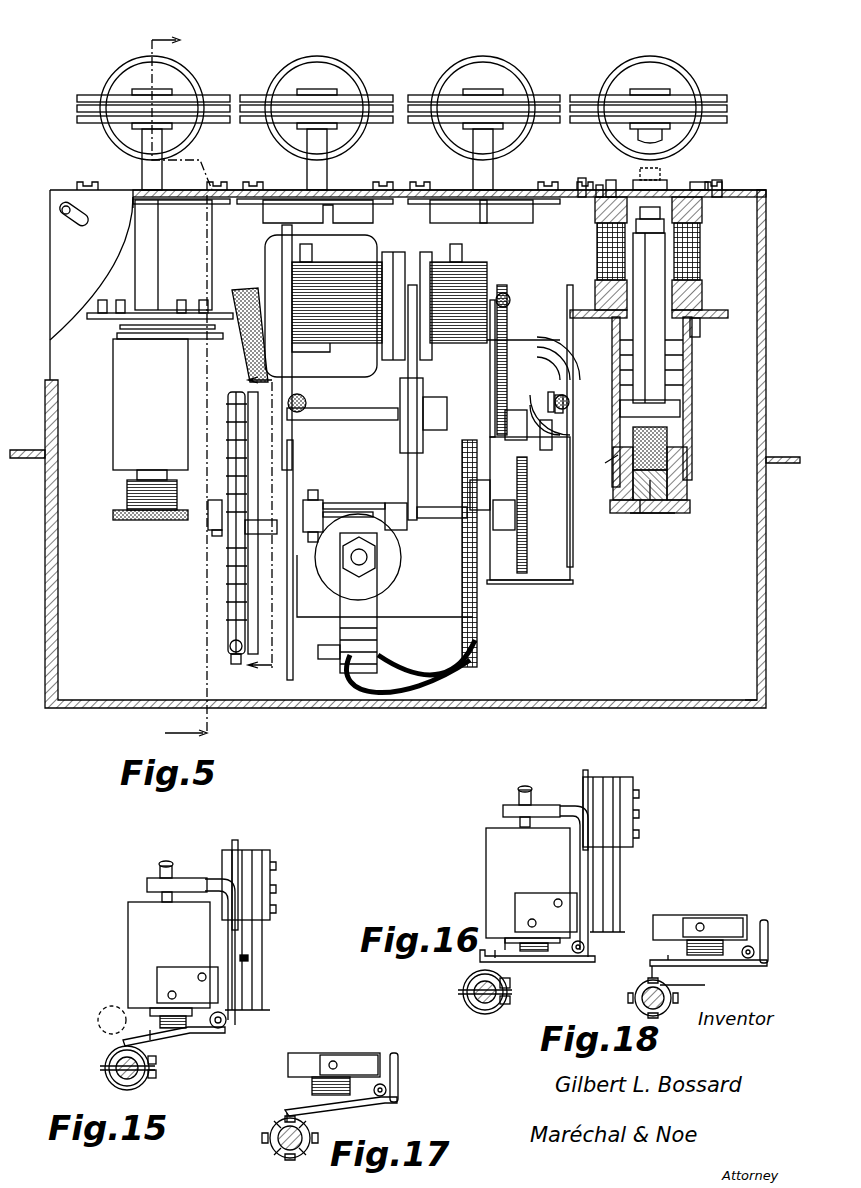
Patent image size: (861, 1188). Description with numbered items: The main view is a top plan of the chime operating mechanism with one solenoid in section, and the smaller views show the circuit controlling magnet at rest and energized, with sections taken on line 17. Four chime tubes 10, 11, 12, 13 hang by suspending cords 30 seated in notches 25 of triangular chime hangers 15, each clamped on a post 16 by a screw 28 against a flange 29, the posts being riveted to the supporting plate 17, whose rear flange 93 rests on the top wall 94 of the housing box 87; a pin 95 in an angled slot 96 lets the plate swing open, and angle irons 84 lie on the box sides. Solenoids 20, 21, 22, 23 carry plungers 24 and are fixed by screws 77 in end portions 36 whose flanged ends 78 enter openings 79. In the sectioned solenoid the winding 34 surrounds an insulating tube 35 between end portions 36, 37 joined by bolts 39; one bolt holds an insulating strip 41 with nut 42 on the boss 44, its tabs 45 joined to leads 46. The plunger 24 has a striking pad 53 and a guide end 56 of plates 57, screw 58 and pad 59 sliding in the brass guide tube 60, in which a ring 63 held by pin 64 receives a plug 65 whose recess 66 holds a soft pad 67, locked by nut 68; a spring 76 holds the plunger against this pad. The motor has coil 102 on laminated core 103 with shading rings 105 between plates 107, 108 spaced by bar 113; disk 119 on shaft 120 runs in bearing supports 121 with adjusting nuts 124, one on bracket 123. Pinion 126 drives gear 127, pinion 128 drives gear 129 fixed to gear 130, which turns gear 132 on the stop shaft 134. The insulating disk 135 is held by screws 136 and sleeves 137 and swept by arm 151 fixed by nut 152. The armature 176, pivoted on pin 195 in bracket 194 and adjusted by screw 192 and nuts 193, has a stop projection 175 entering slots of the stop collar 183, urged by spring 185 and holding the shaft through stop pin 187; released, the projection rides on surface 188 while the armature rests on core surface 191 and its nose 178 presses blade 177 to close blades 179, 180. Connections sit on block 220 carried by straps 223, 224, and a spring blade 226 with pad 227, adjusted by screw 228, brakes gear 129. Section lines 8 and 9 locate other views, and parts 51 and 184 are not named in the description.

In FIG. 5, the section line 8- 8 is at (182, 375).
In FIG. 5, the section line 9- 9 is at (255, 380).
In FIG. 5, the chime tube 10 is at (653, 56).
In FIG. 5, the chime tube 11 is at (505, 66).
In FIG. 5, the chime tube 12 is at (333, 62).
In FIG. 5, the chime tube 13 is at (185, 78).
In FIG. 5, the chime hanger 15 is at (262, 97).
In FIG. 5, the post 16 is at (328, 162).
In FIG. 5, the supporting plate 17 is at (268, 189).
In FIG. 5, the solenoid 20 is at (703, 270).
In FIG. 5, the solenoid 21 is at (500, 241).
In FIG. 5, the solenoid 22 is at (365, 205).
In FIG. 5, the solenoid 23 is at (195, 250).
In FIG. 5, the plunger 24 is at (649, 318).
In FIG. 5, the notch 25 is at (345, 100).
In FIG. 5, the screw 28 is at (308, 90).
In FIG. 5, the flange 29 is at (340, 126).
In FIG. 5, the suspending cord 30 is at (250, 98).
In FIG. 5, the coil 34 is at (705, 243).
In FIG. 5, the insulating tube 35 is at (704, 296).
In FIG. 5, the end portion 36 is at (692, 185).
In FIG. 5, the end portion 37 is at (700, 322).
In FIG. 5, the bolt 39 is at (158, 283).
In FIG. 5, the insulating strip 41 is at (136, 340).
In FIG. 5, the bolt nut 42 is at (163, 340).
In FIG. 5, the boss 44 is at (612, 340).
In FIG. 5, the metal tab 45 is at (121, 344).
In FIG. 5, the insulated lead 46 is at (185, 310).
In FIG. 5, the cap 51 is at (651, 226).
In FIG. 5, the striking pad 53 is at (655, 210).
In FIG. 5, the guide end 56 is at (668, 432).
In FIG. 5, the triangular plate 57 is at (682, 415).
In FIG. 5, the screw 58 is at (665, 435).
In FIG. 5, the pad 59 is at (560, 413).
In FIG. 5, the guide tube 60 is at (685, 462).
In FIG. 5, the threaded ring 63 is at (683, 475).
In FIG. 5, the pin 64 is at (603, 466).
In FIG. 5, the threaded plug 65 is at (662, 515).
In FIG. 5, the recess 66 is at (646, 516).
In FIG. 5, the soft pad 67 is at (640, 507).
In FIG. 5, the lock nut 68 is at (687, 490).
In FIG. 5, the spring 76 is at (683, 372).
In FIG. 5, the attaching screw 77 is at (581, 178).
In FIG. 5, the flanged end 78 is at (609, 181).
In FIG. 5, the opening 79 is at (600, 185).
In FIG. 5, the angle iron 84 is at (40, 452).
In FIG. 5, the housing box 87 is at (742, 710).
In FIG. 5, the rearward flange 93 is at (107, 210).
In FIG. 5, the top wall 94 is at (108, 258).
In FIG. 5, the pin 95 is at (64, 212).
In FIG. 5, the slot 96 is at (80, 226).
In FIG. 5, the motor coil 102 is at (355, 366).
In FIG. 5, the laminated core element 103 is at (359, 275).
In FIG. 5, the shading ring 105 is at (425, 256).
In FIG. 5, the supporting plate 107 is at (290, 650).
In FIG. 5, the supporting plate 108 is at (480, 632).
In FIG. 5, the bar 113 is at (432, 616).
In FIG. 15, the bar 113 is at (160, 976).
In FIG. 16, the bar 113 is at (531, 889).
In FIG. 5, the rotatable disk 119 is at (406, 464).
In FIG. 5, the shaft 120 is at (362, 420).
In FIG. 5, the ball-bearing support 121 is at (288, 402).
In FIG. 5, the bracket member 123 is at (463, 456).
In FIG. 5, the adjusting nut 124 is at (566, 408).
In FIG. 5, the driving pinion 126 is at (462, 428).
In FIG. 5, the gear 127 is at (508, 292).
In FIG. 5, the pinion 128 is at (500, 285).
In FIG. 5, the gear 129 is at (485, 384).
In FIG. 5, the gear 130 is at (527, 345).
In FIG. 5, the gear 132 is at (530, 545).
In FIG. 5, the stop shaft 134 is at (440, 519).
In FIG. 16, the stop shaft 134 is at (508, 997).
In FIG. 18, the stop shaft 134 is at (682, 991).
In FIG. 5, the insulating disk 135 is at (236, 552).
In FIG. 5, the screw 136 is at (248, 522).
In FIG. 5, the spacing sleeve 137 is at (240, 528).
In FIG. 5, the arm 151 is at (222, 600).
In FIG. 5, the nut 152 is at (214, 507).
In FIG. 15, the stop projection 175 is at (125, 1050).
In FIG. 16, the stop projection 175 is at (480, 955).
In FIG. 15, the armature 176 is at (205, 1035).
In FIG. 16, the armature 176 is at (560, 962).
In FIG. 15, the blade 177 is at (246, 938).
In FIG. 16, the blade 177 is at (608, 870).
In FIG. 15, the insulated nose projection 178 is at (250, 956).
In FIG. 16, the insulated nose projection 178 is at (612, 888).
In FIG. 15, the blade 179 is at (256, 976).
In FIG. 16, the blade 179 is at (616, 904).
In FIG. 15, the blade 180 is at (263, 1003).
In FIG. 16, the blade 180 is at (622, 922).
In FIG. 5, the stop collar 183 is at (378, 502).
In FIG. 15, the stop collar 183 is at (110, 1075).
In FIG. 16, the stop collar 183 is at (478, 1006).
In FIG. 17, the stop collar 183 is at (283, 1122).
In FIG. 18, the stop collar 183 is at (672, 1006).
In FIG. 16, the pin 184 is at (505, 990).
In FIG. 5, the spring means 185 is at (320, 500).
In FIG. 15, the spring means 185 is at (152, 1072).
In FIG. 16, the spring means 185 is at (466, 1002).
In FIG. 15, the stop pin 187 is at (100, 1068).
In FIG. 17, the cylindrical surface 188 is at (310, 1131).
In FIG. 18, the cylindrical surface 188 is at (710, 968).
In FIG. 15, the lower surface 191 is at (172, 1034).
In FIG. 16, the lower surface 191 is at (485, 963).
In FIG. 18, the lower surface 191 is at (675, 952).
In FIG. 15, the threaded screw 192 is at (166, 862).
In FIG. 16, the threaded screw 192 is at (527, 788).
In FIG. 15, the nut 193 is at (185, 892).
In FIG. 16, the nut 193 is at (510, 817).
In FIG. 5, the supporting bracket 194 is at (362, 608).
In FIG. 15, the supporting bracket 194 is at (238, 846).
In FIG. 16, the supporting bracket 194 is at (555, 808).
In FIG. 15, the pin 195 is at (226, 1022).
In FIG. 16, the pin 195 is at (582, 952).
In FIG. 18, the pin 195 is at (768, 960).
In FIG. 5, the insulating block 220 is at (573, 560).
In FIG. 5, the strap 223 is at (548, 584).
In FIG. 5, the additional strap 224 is at (476, 660).
In FIG. 5, the spring blade 226 is at (505, 530).
In FIG. 5, the friction pad 227 is at (470, 492).
In FIG. 5, the screw 228 is at (531, 465).